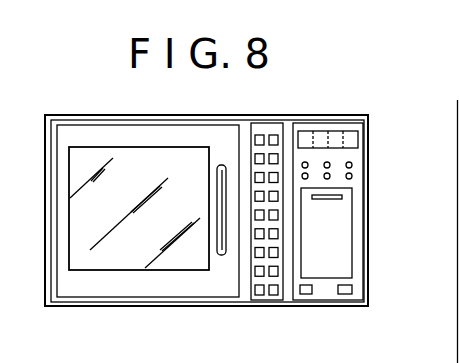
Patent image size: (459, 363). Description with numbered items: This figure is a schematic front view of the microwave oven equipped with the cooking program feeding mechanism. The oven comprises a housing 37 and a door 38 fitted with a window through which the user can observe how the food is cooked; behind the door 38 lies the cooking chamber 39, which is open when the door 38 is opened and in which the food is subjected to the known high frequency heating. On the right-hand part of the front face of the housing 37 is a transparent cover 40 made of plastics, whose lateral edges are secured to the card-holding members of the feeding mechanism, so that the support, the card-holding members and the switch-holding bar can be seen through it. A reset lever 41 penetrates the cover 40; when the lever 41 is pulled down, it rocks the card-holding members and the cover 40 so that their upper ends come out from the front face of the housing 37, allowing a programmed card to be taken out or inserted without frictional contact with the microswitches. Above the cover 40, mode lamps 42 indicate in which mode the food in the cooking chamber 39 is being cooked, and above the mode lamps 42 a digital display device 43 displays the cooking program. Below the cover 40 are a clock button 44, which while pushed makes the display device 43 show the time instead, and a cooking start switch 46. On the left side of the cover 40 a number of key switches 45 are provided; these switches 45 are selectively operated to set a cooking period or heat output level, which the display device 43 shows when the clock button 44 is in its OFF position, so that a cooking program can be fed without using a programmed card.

The housing 37 is at (88, 115).
The door 38 is at (178, 289).
The cooking chamber 39 is at (108, 262).
The transparent cover 40 is at (345, 255).
The reset lever 41 is at (327, 199).
The mode lamps 42 is at (355, 168).
The digital display device 43 is at (333, 128).
The clock button 44 is at (305, 294).
The key switches 45 is at (263, 296).
The cooking start switch 46 is at (345, 294).